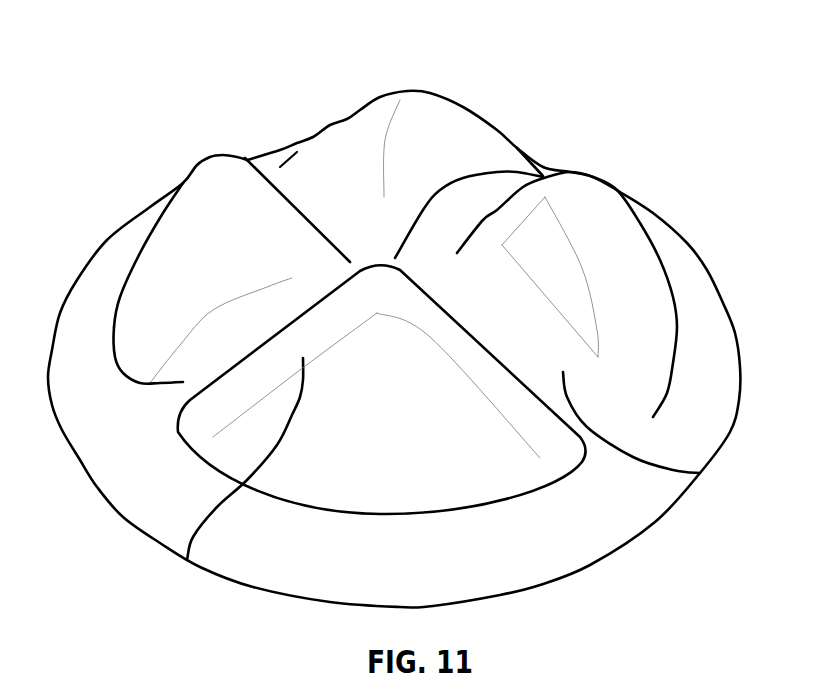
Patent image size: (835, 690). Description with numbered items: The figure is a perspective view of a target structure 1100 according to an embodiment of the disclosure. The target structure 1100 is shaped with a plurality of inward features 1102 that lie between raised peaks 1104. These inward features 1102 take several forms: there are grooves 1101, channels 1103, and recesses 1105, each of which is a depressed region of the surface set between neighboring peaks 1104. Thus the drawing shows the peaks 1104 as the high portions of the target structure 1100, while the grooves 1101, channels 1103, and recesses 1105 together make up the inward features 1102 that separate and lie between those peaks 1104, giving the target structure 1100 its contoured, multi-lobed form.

The target structure 1100 is at (689, 189).
The groove 1101 is at (515, 193).
The inward feature 1102 is at (303, 180).
The channel 1103 is at (325, 198).
The peak 1104 is at (198, 197).
The recess 1105 is at (188, 395).